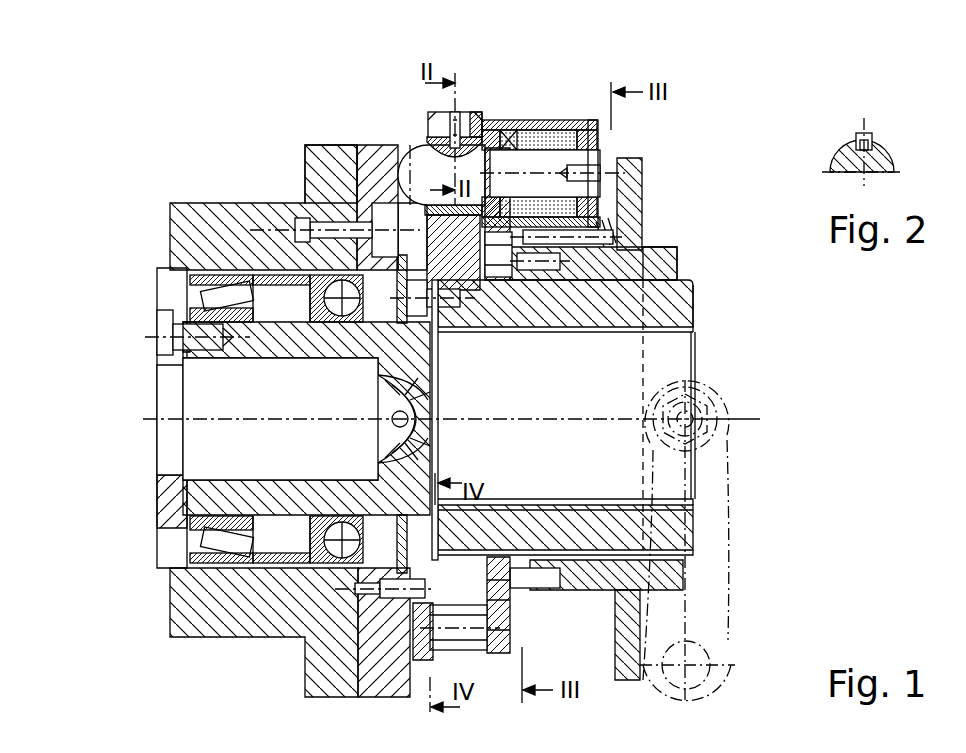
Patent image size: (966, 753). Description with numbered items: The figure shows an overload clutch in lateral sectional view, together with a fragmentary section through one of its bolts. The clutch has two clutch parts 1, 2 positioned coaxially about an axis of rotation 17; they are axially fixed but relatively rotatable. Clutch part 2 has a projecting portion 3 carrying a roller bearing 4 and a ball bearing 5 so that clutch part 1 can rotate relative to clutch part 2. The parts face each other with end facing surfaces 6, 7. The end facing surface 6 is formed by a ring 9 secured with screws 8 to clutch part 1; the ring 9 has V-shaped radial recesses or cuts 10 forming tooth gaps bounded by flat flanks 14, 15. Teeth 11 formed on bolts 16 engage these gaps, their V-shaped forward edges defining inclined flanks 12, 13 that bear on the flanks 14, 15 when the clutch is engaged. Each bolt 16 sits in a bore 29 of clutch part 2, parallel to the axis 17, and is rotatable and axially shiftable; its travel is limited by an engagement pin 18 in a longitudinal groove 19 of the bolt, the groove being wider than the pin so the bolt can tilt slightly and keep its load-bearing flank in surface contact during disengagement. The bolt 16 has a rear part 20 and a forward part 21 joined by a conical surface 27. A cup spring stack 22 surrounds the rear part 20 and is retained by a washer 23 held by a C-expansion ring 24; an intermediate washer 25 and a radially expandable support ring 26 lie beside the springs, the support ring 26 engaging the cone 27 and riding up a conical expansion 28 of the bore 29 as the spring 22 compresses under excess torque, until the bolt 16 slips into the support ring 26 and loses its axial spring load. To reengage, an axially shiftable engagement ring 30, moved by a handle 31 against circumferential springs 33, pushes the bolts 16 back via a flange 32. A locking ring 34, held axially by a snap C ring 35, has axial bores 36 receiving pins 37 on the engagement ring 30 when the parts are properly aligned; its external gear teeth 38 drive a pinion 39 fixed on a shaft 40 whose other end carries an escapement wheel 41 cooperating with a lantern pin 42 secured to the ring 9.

In FIG. 1, the clutch part 1 is at (200, 215).
In FIG. 1, the clutch part 2 is at (672, 310).
In FIG. 1, the projecting portion 3 is at (200, 492).
In FIG. 1, the roller bearing 4 is at (230, 300).
In FIG. 1, the ball bearing 5 is at (337, 550).
In FIG. 1, the end facing surface 6 is at (357, 690).
In FIG. 1, the end facing surface 7 is at (425, 158).
In FIG. 1, the screws 8 is at (300, 232).
In FIG. 1, the ring 9 is at (345, 165).
In FIG. 1, the recesses or cuts 10 is at (397, 417).
In FIG. 1, the teeth 11 is at (365, 170).
In FIG. 1, the flank 12 is at (412, 436).
In FIG. 1, the flank 13 is at (436, 375).
In FIG. 1, the flank 14 is at (397, 435).
In FIG. 1, the flank 15 is at (405, 408).
In FIG. 1, the bolts 16 is at (632, 200).
In FIG. 1, the axis of rotation 17 is at (175, 420).
In FIG. 1, the engagement pins 18 is at (440, 122).
In FIG. 2, the engagement pins 18 is at (868, 130).
In FIG. 1, the longitudinal grooves 19 is at (446, 138).
In FIG. 2, the longitudinal grooves 19 is at (852, 140).
In FIG. 1, the rear part 20 is at (610, 235).
In FIG. 1, the forward part 21 is at (583, 174).
In FIG. 1, the cup spring stack 22 is at (585, 125).
In FIG. 1, the washer 23 is at (592, 160).
In FIG. 1, the C-expansion ring 24 is at (600, 130).
In FIG. 1, the intermediate engagement ring 25 is at (545, 135).
In FIG. 1, the support ring 26 is at (507, 135).
In FIG. 1, the conical surface 27 is at (502, 278).
In FIG. 1, the conical expansion 28 is at (476, 122).
In FIG. 1, the bore 29 is at (330, 182).
In FIG. 1, the engagement ring 30 is at (668, 265).
In FIG. 1, the handle 31 is at (712, 618).
In FIG. 1, the flange 32 is at (682, 593).
In FIG. 1, the springs 33 is at (655, 252).
In FIG. 1, the locking ring 34 is at (508, 508).
In FIG. 1, the snap C ring 35 is at (520, 272).
In FIG. 1, the axial bores 36 is at (533, 508).
In FIG. 1, the pins 37 is at (555, 248).
In FIG. 1, the gear teeth 38 is at (512, 596).
In FIG. 1, the pinion 39 is at (515, 643).
In FIG. 1, the shaft 40 is at (500, 655).
In FIG. 1, the escapement wheel 41 is at (445, 630).
In FIG. 1, the lantern pin 42 is at (383, 613).